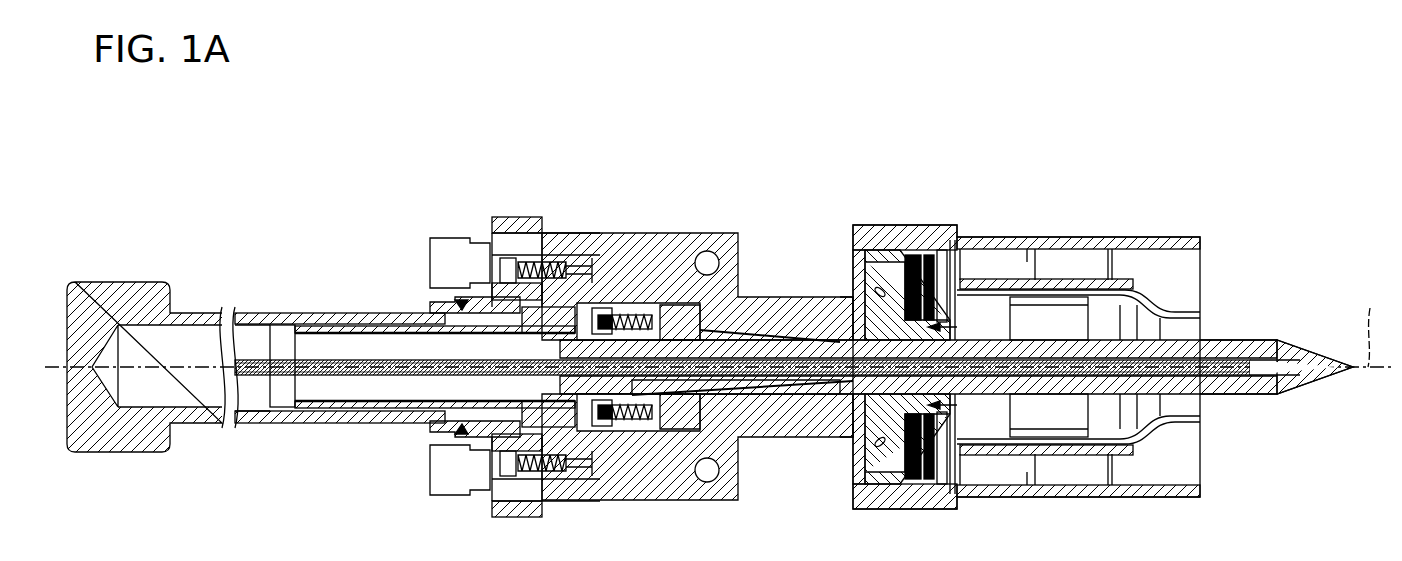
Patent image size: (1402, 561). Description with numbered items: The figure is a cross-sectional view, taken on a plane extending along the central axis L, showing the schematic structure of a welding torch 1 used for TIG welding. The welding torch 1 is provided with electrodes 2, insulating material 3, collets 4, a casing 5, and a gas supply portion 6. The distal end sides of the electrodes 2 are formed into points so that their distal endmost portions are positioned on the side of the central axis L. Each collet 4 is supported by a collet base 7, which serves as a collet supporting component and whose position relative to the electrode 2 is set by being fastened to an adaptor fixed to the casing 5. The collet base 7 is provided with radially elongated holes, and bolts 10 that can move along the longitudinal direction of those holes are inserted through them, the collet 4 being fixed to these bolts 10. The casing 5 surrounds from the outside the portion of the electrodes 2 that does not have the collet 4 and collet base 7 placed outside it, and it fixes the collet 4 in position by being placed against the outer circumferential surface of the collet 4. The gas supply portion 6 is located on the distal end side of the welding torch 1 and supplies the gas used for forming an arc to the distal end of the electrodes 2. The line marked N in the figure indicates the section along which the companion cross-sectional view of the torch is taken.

The welding torch 1 is at (369, 252).
The electrodes 2 is at (1247, 342).
The insulating material 3 is at (993, 362).
The collets 4 is at (672, 330).
The casing 5 is at (723, 250).
The gas supply portion 6 is at (1213, 452).
The collet base 7 is at (632, 325).
The bolts 10 is at (600, 330).
The line N- N is at (952, 367).
The central axis L is at (1366, 321).